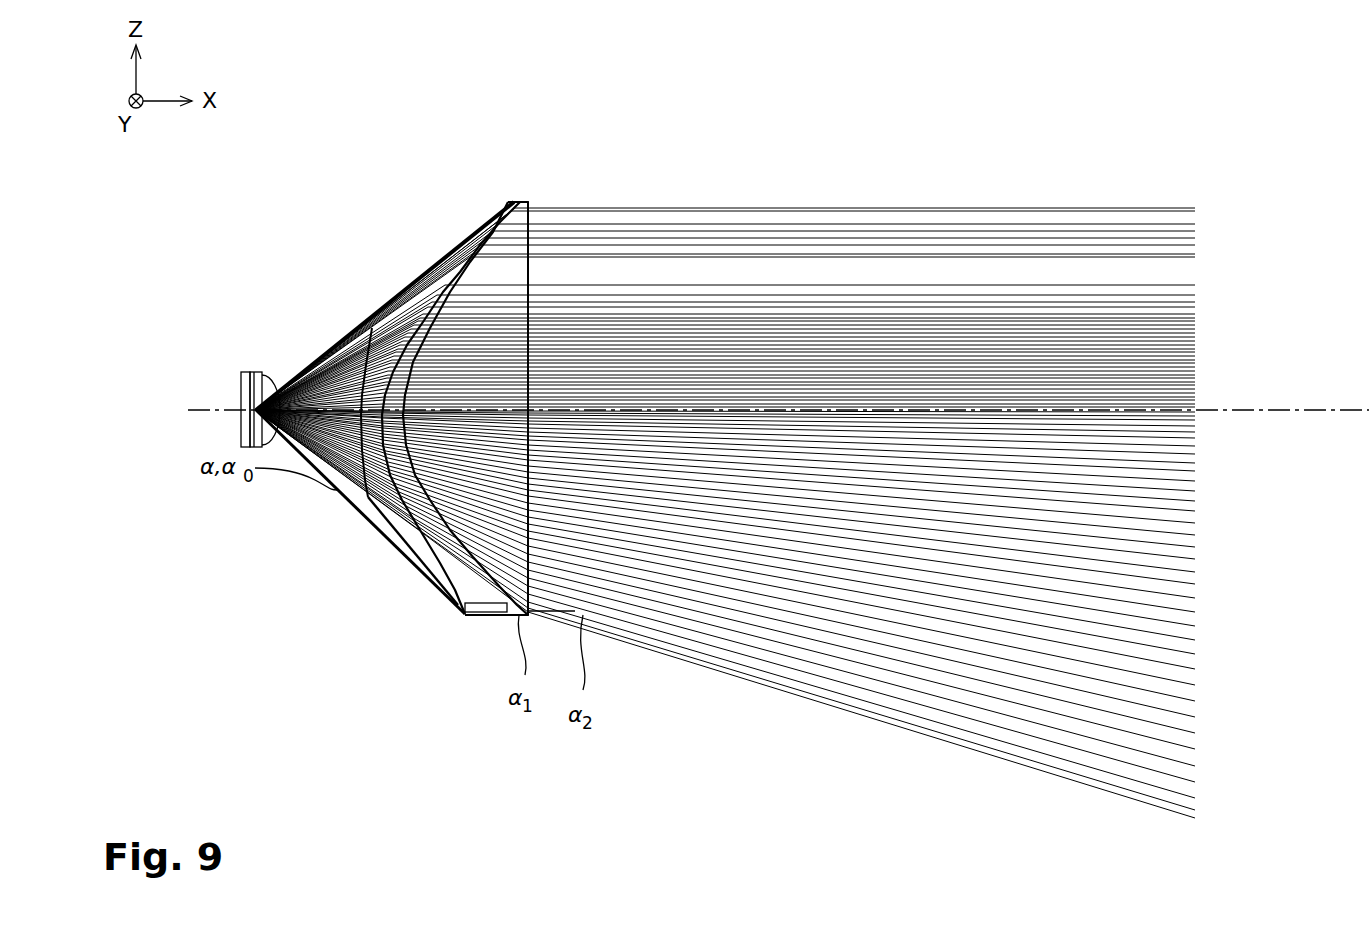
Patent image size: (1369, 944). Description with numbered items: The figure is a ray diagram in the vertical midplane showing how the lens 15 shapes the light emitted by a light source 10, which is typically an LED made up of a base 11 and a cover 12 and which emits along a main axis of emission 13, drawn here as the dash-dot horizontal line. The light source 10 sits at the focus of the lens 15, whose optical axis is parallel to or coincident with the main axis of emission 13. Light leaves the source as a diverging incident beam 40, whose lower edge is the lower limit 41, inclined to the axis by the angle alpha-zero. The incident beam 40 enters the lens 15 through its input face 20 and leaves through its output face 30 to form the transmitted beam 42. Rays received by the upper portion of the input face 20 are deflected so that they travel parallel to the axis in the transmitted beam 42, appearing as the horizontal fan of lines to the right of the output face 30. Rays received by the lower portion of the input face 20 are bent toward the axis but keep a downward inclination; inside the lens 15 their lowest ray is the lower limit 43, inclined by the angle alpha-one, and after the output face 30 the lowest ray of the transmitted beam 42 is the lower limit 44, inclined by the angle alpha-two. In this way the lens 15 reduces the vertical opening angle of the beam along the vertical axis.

The light source 10 is at (205, 351).
The base 11 is at (241, 385).
The cover 12 is at (241, 435).
The main axis of emission 13 is at (1293, 412).
The lens 15 is at (461, 415).
The input face 20 is at (388, 408).
The output face 30 is at (528, 268).
The incident beam 40 is at (719, 464).
The lower limit of the incident beam 41 is at (337, 498).
The transmitted beam 42 is at (891, 200).
The lower limit of the beam inside the lens 43 is at (485, 616).
The lower limit of the transmitted beam 44 is at (818, 705).